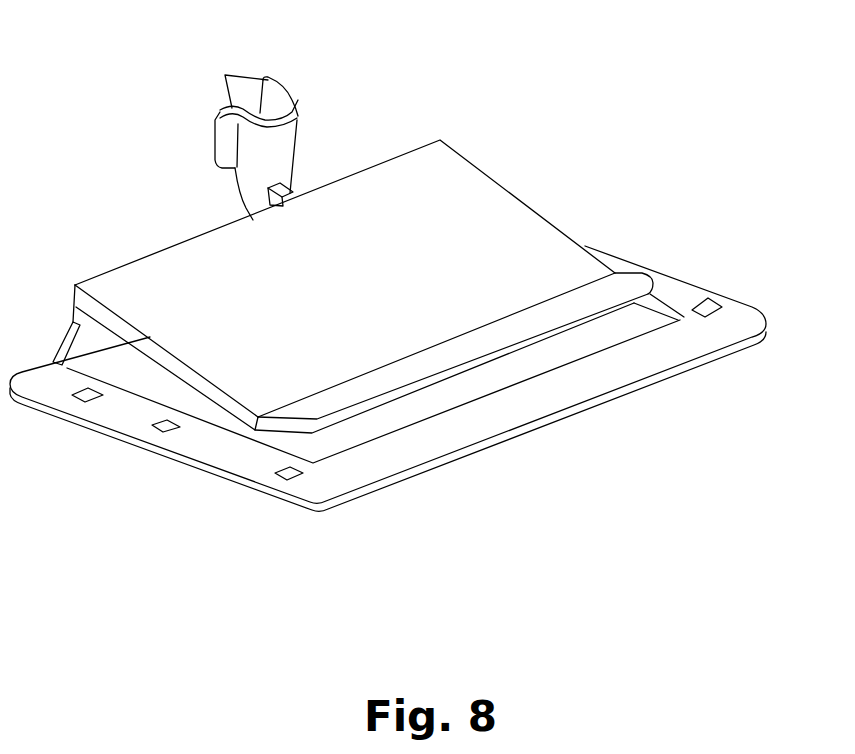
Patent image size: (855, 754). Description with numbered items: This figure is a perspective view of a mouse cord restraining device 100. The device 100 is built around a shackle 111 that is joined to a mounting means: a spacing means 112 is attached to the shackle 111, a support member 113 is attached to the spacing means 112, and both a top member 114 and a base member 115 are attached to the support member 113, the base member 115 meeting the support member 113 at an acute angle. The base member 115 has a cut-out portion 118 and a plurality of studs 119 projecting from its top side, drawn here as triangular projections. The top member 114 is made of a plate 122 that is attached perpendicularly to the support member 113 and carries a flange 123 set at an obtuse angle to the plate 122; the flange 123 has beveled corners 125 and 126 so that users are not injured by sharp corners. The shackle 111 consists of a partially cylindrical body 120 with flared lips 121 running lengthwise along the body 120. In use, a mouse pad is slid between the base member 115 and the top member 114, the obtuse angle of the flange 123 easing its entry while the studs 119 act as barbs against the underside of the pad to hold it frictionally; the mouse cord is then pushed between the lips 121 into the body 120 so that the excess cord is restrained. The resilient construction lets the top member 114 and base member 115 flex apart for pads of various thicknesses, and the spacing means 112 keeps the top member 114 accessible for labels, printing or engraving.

The device 100 is at (653, 167).
The shackle 111 is at (298, 117).
The spacing means 112 is at (293, 191).
The support member 113 is at (70, 313).
The top member 114 is at (344, 270).
The base member 115 is at (558, 421).
The cut-out portion 118 is at (567, 353).
The studs 119 is at (275, 473).
The partially cylindrical body 120 is at (288, 121).
The flared lips 121 is at (233, 109).
The plate 122 is at (485, 216).
The flange 123 is at (500, 332).
The beveled corner 125 is at (641, 273).
The beveled corner 126 is at (330, 427).